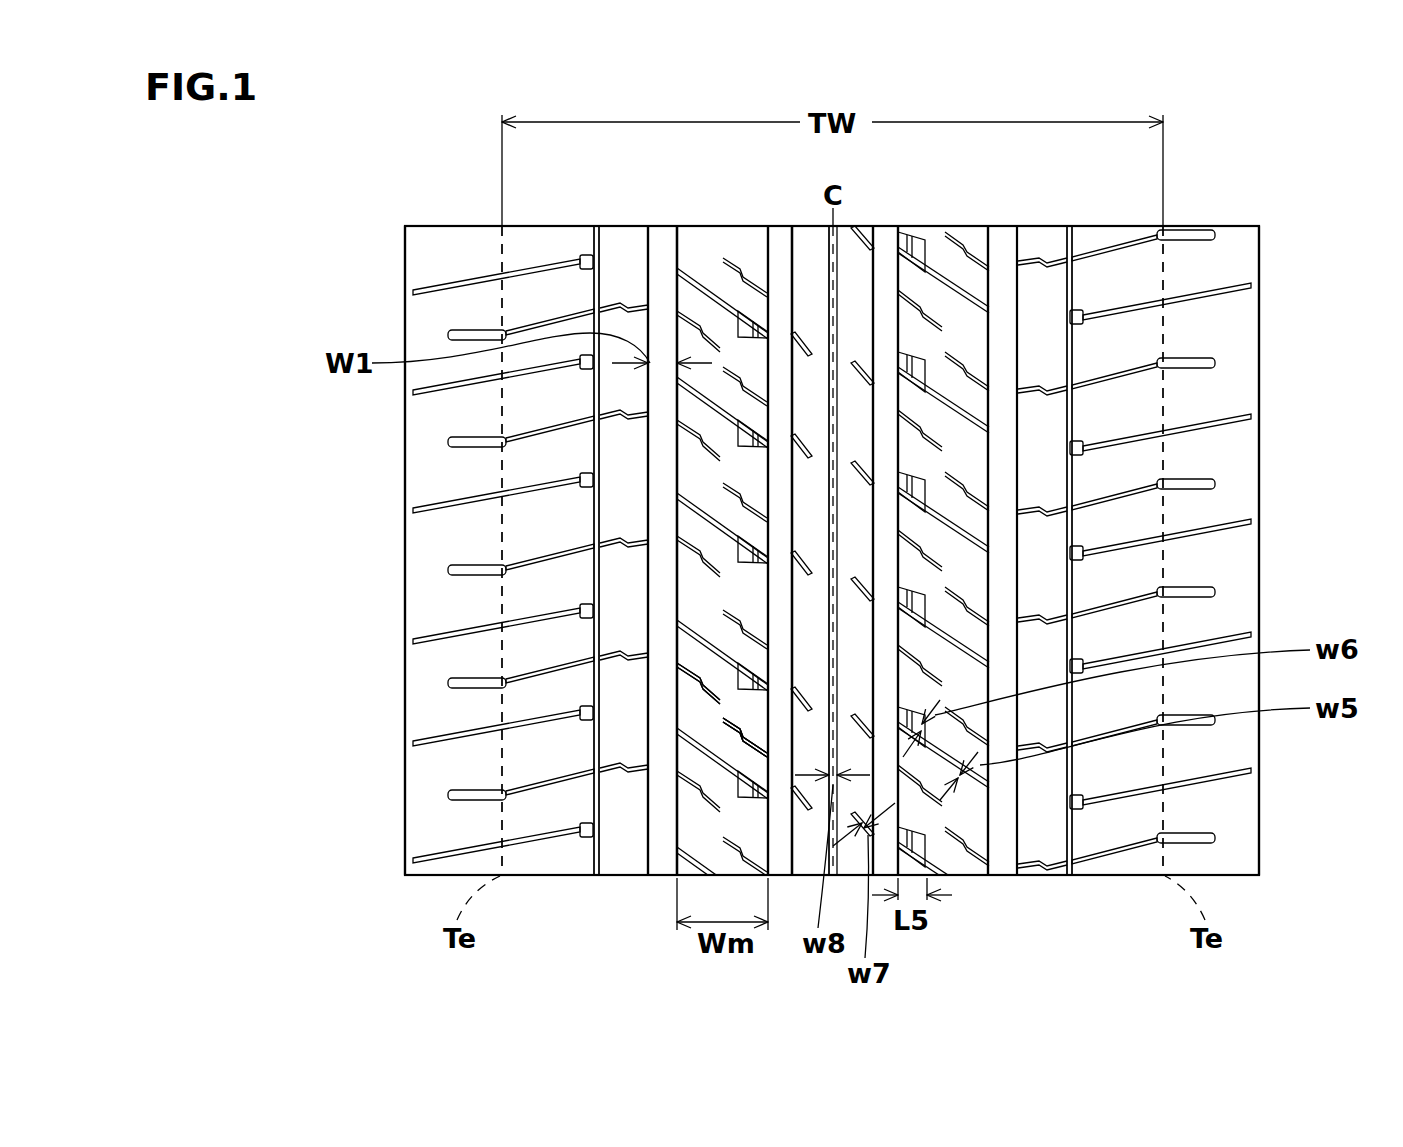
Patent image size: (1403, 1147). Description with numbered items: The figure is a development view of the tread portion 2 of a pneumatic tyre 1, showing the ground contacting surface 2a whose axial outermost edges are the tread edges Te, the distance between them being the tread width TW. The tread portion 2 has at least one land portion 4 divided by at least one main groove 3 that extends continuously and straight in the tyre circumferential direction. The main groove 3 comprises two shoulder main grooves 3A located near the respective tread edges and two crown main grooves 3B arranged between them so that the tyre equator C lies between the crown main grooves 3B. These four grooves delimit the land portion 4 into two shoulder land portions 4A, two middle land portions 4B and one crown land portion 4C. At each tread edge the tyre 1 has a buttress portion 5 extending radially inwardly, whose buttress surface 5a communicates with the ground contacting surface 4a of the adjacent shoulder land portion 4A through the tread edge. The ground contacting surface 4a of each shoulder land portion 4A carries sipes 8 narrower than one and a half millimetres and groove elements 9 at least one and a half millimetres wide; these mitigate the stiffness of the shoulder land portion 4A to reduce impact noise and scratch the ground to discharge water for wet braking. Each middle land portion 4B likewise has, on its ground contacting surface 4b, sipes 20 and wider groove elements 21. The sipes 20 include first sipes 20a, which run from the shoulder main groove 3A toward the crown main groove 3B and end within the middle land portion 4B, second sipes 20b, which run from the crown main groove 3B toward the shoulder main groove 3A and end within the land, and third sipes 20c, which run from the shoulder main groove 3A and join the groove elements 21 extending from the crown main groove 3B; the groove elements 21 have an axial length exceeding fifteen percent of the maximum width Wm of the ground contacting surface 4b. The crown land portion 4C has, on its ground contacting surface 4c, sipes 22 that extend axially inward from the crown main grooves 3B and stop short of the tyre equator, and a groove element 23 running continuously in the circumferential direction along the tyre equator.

The pneumatic tyre 1 is at (1275, 168).
The tread portion 2 is at (1122, 205).
The ground contacting surface 2a is at (1097, 243).
The main groove 3 is at (660, 862).
The shoulder main groove 3A is at (665, 265).
The crown main groove 3B is at (780, 265).
The land portion 4 is at (563, 862).
The shoulder land portion 4A is at (545, 250).
The ground contacting surface 4a is at (528, 862).
The middle land portion 4B is at (710, 260).
The ground contacting surface 4b is at (935, 250).
The crown land portion 4C is at (811, 260).
The ground contacting surface 4c is at (805, 840).
The buttress portion 5 is at (432, 215).
The buttress surface 5a is at (462, 250).
The sipe 8 is at (560, 555).
The groove element 9 is at (583, 492).
The sipe 20 is at (708, 643).
The first sipe 20a is at (695, 676).
The second sipe 20b is at (757, 746).
The third sipe 20c is at (740, 735).
The groove element 21 is at (915, 605).
The sipe 22 is at (868, 467).
The groove element 23 is at (833, 327).